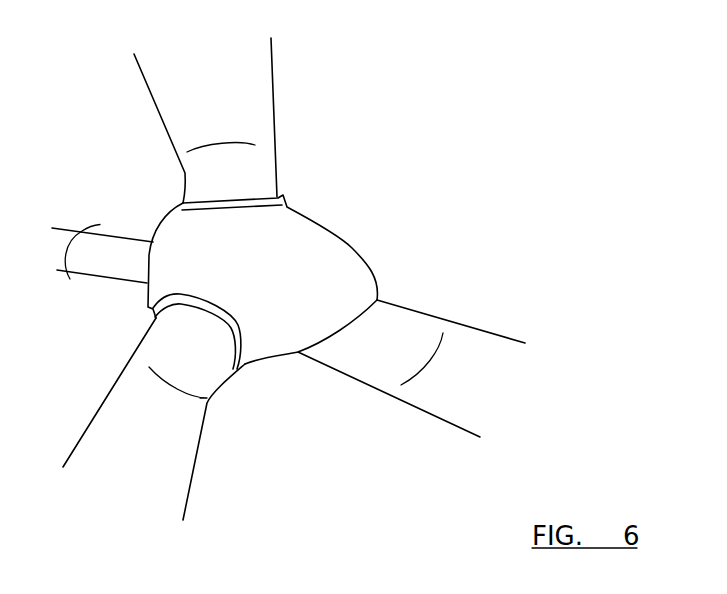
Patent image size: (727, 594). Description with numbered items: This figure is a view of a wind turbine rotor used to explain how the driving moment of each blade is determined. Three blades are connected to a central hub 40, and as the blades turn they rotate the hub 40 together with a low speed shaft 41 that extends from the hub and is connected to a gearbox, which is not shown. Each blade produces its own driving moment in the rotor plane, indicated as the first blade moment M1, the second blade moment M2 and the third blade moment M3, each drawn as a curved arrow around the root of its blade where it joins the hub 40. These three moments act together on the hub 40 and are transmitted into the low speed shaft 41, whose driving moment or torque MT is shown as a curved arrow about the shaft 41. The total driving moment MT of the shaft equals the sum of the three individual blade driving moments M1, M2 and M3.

The hub 40 is at (342, 238).
The low speed shaft 41 is at (133, 272).
The driving moment of the first blade M1 is at (221, 134).
The driving moment of the second blade M2 is at (423, 366).
The driving moment of the third blade M3 is at (174, 395).
The driving moment of the shaft MT is at (66, 252).